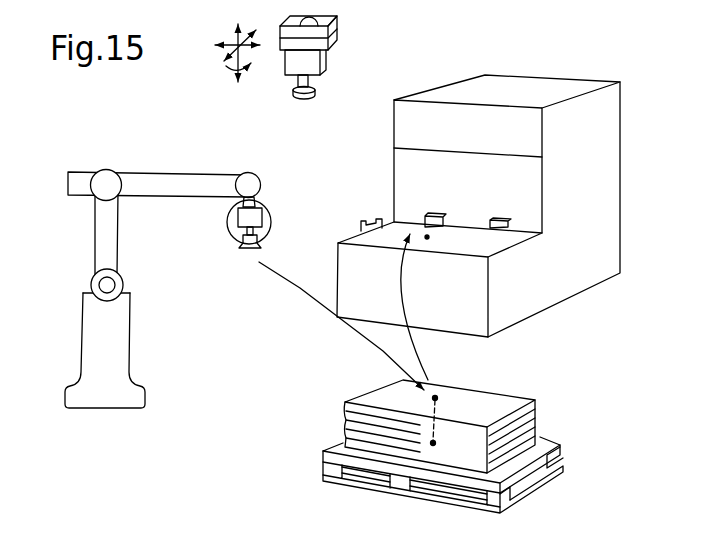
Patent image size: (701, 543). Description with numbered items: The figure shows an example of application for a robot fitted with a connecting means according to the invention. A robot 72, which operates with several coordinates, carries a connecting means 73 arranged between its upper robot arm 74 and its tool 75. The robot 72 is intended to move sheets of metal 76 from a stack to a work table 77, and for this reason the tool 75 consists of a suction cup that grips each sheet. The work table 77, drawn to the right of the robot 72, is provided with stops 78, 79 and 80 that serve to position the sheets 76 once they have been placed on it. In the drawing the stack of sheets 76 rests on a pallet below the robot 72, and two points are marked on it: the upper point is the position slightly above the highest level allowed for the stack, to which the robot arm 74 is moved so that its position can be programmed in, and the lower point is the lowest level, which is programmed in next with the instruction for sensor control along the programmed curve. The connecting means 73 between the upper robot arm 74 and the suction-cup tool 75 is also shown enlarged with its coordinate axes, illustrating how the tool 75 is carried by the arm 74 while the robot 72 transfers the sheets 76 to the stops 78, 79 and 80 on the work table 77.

The robot 72 is at (151, 268).
The connecting means 73 is at (268, 215).
The upper robot arm 74 is at (157, 182).
The tool 75 is at (247, 251).
The sheets of metal 76 is at (540, 422).
The work table 77 is at (391, 232).
The stop 78 is at (513, 223).
The stop 79 is at (443, 223).
The stop 80 is at (360, 223).